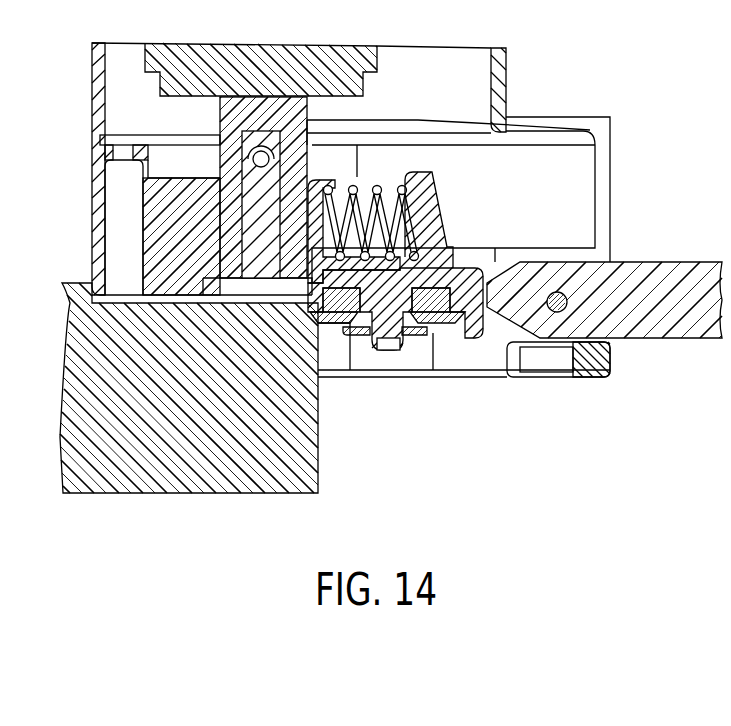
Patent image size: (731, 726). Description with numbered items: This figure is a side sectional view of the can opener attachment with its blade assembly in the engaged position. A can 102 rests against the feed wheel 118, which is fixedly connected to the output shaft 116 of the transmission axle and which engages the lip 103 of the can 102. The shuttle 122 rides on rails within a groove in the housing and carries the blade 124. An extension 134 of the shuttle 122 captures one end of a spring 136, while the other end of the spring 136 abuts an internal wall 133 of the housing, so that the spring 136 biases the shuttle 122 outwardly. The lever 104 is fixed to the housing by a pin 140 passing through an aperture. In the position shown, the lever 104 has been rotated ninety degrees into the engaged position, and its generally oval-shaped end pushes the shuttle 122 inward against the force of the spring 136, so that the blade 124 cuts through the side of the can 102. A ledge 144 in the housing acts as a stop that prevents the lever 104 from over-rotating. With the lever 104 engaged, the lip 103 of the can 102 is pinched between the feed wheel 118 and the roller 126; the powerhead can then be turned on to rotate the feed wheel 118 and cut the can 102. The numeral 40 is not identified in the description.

The can 102 is at (72, 472).
The lip 103 is at (317, 310).
The lever 104 is at (682, 273).
The output shaft 116 is at (233, 116).
The feed wheel 118 is at (267, 248).
The shuttle 122 is at (470, 287).
The blade 124 is at (317, 320).
The roller 126 is at (350, 327).
The internal wall 133 is at (317, 182).
The extension 134 is at (433, 228).
The spring 136 is at (397, 270).
The pin 140 is at (557, 293).
The ledge 144 is at (583, 355).
The assembly 40 is at (7, 272).